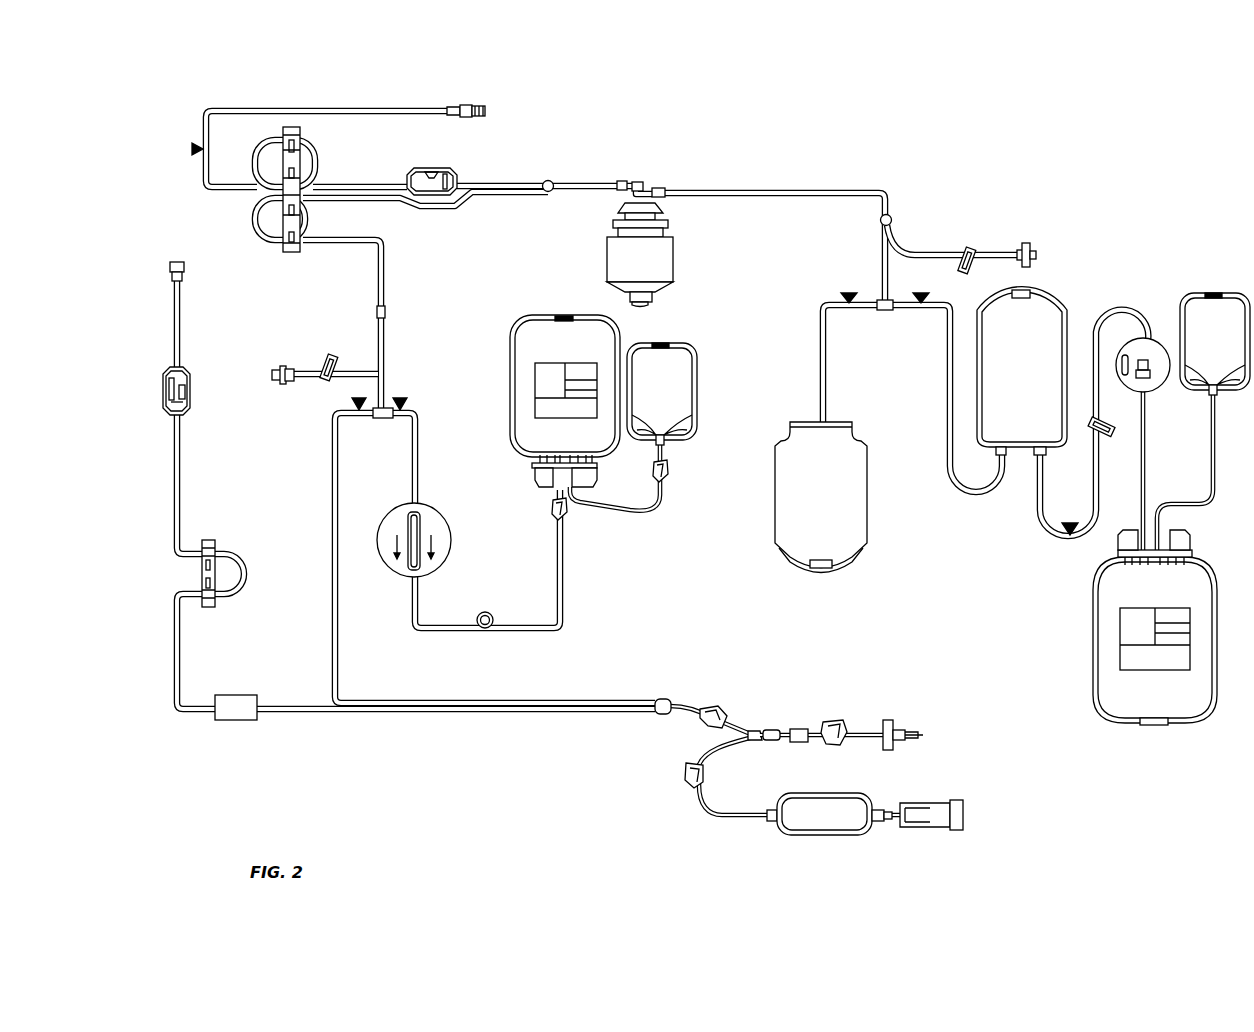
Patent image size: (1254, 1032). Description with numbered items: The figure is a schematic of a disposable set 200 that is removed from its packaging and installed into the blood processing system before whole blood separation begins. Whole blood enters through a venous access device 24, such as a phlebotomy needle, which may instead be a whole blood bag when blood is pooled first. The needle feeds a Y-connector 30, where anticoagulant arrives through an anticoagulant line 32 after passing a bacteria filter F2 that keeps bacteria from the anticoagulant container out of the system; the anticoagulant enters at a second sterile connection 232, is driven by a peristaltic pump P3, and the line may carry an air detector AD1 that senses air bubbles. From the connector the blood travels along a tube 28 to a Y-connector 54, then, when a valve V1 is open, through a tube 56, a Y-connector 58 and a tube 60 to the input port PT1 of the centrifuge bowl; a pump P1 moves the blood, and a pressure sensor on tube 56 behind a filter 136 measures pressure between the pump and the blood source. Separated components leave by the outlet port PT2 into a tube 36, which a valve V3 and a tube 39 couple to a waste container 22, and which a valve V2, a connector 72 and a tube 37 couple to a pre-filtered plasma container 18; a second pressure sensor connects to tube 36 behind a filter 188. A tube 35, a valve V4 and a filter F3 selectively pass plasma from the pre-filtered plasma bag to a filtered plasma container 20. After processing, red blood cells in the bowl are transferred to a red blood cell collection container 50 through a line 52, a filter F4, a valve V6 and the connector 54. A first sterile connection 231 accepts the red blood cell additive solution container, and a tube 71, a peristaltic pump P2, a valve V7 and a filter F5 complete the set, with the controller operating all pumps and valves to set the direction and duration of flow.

The disposable set 200 is at (667, 470).
The first sterile connection 231 is at (466, 104).
The tube 71 is at (352, 108).
The peristaltic pump P2 is at (290, 158).
The valve V7 is at (190, 149).
The pump P1 is at (300, 216).
The filter F5 is at (420, 168).
The Y-connector 58 is at (548, 180).
The tube 60 is at (588, 180).
The input port PT1 is at (620, 180).
The outlet port PT2 is at (660, 187).
The tube 36 is at (793, 190).
The connector 72 is at (892, 216).
The filter 188 is at (1027, 245).
The valve V3 is at (843, 280).
The tube 35 is at (1105, 318).
The filter F3 is at (1152, 350).
The second sterile connection 232 is at (170, 266).
The tube 56 is at (384, 277).
The filter 136 is at (282, 386).
The valve V1 is at (348, 392).
The valve V6 is at (405, 392).
The Y-connector 54 is at (382, 420).
The tube 28 is at (332, 497).
The bacteria filter F2 is at (163, 388).
The tube 32 is at (176, 494).
The peristaltic pump P3 is at (215, 582).
The filter F4 is at (437, 525).
The red blood cell collection container 50 is at (577, 446).
The line 52 is at (563, 580).
The tube 39 is at (820, 364).
The waste container 22 is at (834, 529).
The pre-filtered plasma container 18 is at (1035, 343).
The valve V2 is at (916, 293).
The tube 37 is at (957, 494).
The valve V4 is at (1070, 506).
The filtered plasma container 20 is at (1168, 700).
The Y-connector 30 is at (663, 701).
The venous access device 24 is at (905, 740).
The air detector AD1 is at (232, 722).